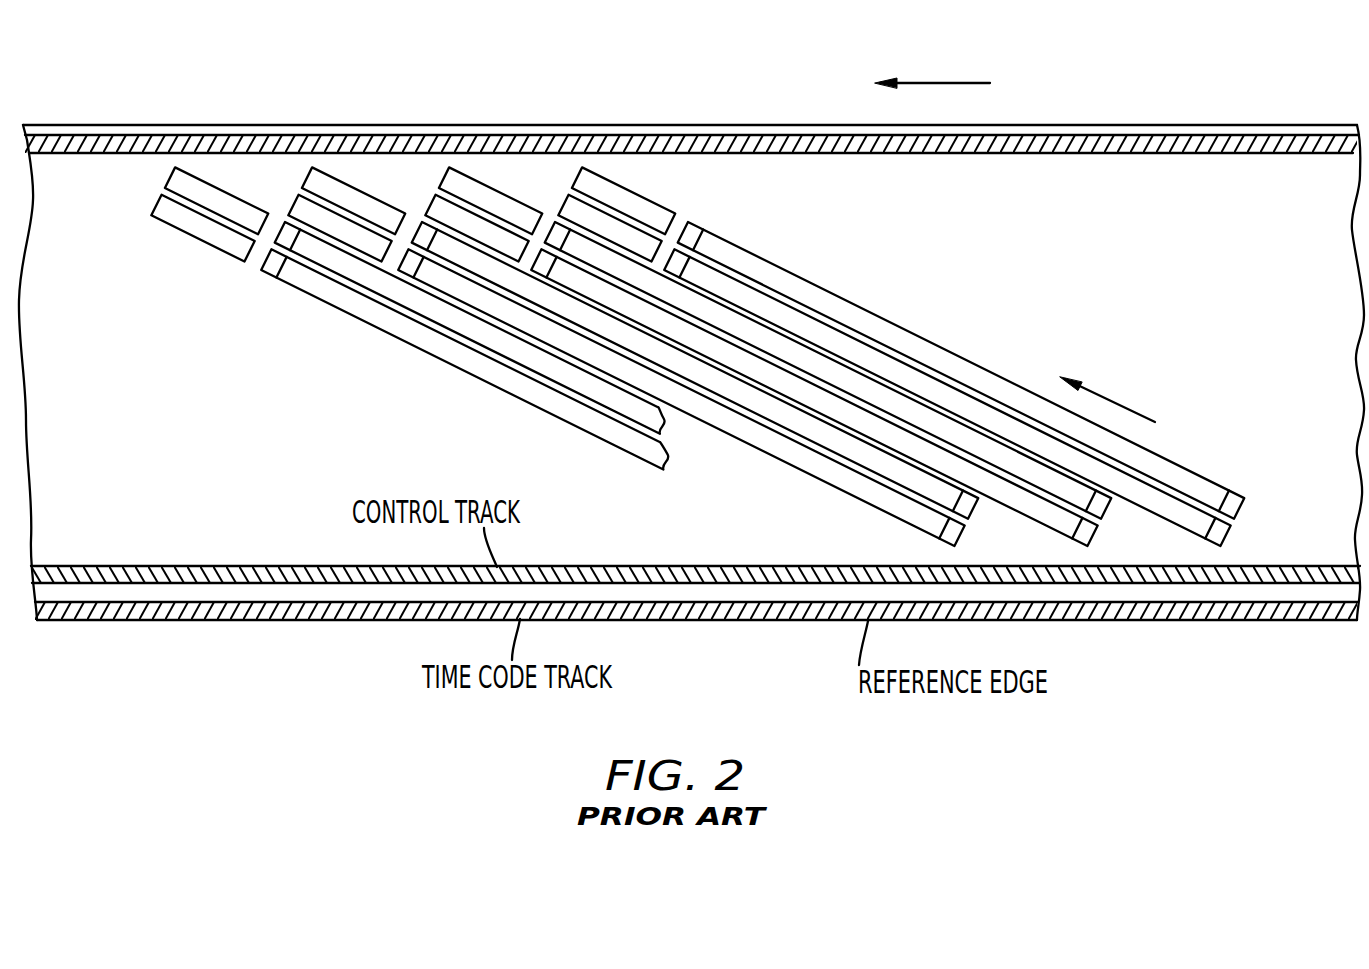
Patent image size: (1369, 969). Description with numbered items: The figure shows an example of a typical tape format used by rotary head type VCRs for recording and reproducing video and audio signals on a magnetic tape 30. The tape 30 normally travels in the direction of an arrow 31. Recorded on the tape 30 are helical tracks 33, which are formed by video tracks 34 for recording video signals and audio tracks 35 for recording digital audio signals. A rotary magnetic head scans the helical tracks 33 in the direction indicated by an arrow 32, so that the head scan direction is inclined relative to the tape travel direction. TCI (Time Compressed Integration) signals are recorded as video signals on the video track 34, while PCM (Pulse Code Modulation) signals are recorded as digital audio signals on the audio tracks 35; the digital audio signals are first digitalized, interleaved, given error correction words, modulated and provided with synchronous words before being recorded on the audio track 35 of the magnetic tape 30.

The magnetic tape 30 is at (1223, 256).
The arrow 31 is at (927, 83).
The arrow 32 is at (1123, 402).
The helical tracks 33 is at (818, 266).
The video track 34 is at (862, 347).
The audio track 35 is at (563, 207).